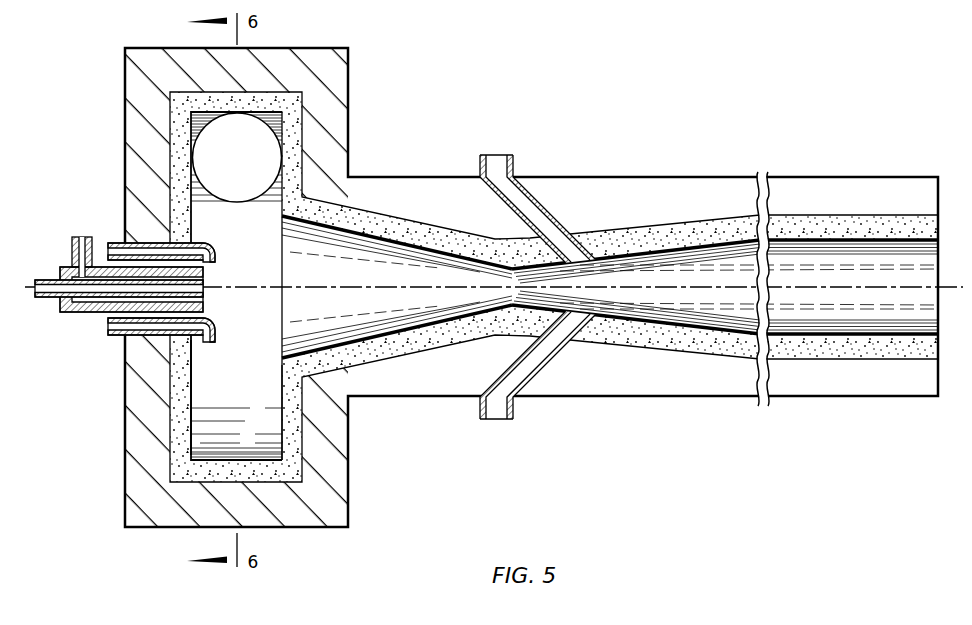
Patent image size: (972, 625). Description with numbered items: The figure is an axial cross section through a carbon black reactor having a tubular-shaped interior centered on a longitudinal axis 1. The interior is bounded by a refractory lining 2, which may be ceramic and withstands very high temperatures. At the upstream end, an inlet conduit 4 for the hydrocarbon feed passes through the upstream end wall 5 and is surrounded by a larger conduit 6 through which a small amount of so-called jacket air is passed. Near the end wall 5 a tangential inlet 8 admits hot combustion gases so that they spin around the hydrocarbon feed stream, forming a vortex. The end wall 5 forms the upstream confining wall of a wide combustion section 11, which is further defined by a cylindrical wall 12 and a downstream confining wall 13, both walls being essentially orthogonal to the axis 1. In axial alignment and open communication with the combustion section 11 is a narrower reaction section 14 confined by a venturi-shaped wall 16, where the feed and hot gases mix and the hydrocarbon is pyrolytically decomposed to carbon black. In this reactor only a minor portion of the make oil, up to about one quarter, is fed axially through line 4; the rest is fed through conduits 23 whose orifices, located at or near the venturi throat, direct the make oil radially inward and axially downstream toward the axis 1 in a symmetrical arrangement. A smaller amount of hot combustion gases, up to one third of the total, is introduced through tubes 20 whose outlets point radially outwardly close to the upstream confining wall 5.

The longitudinal axis 1 is at (313, 287).
The refractory lining 2 is at (181, 212).
The inlet conduit 4 is at (204, 290).
The upstream end wall 5 is at (195, 400).
The larger conduit 6 is at (205, 264).
The tangential inlet 8 is at (245, 189).
The combustion section 11 is at (259, 266).
The cylindrical wall 12 is at (237, 460).
The downstream confining wall 13 is at (282, 394).
The reaction section 14 is at (356, 266).
The venturi-shaped wall 16 is at (680, 322).
The tubes 20 is at (208, 238).
The conduits 23 is at (510, 187).